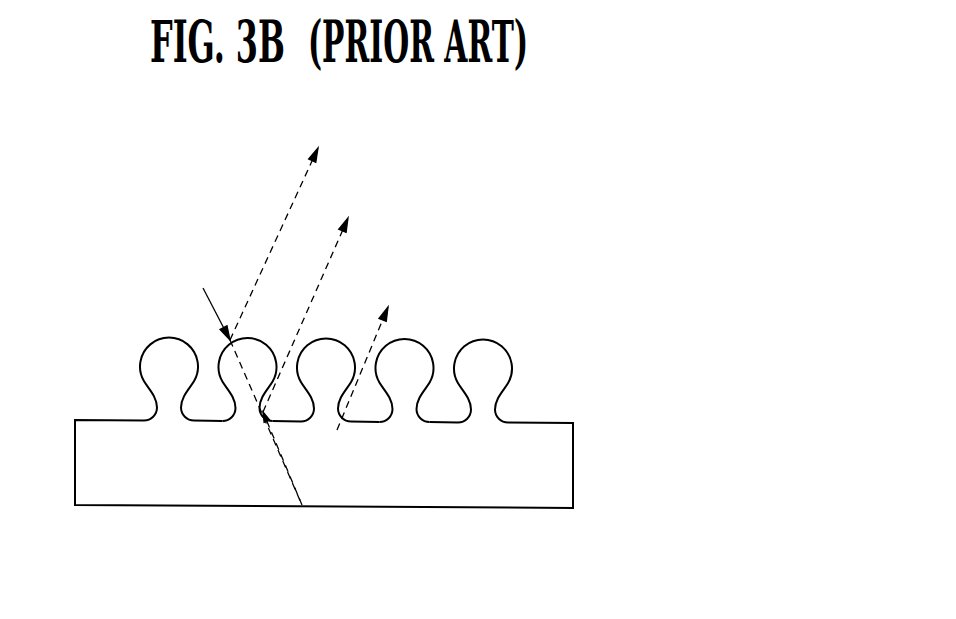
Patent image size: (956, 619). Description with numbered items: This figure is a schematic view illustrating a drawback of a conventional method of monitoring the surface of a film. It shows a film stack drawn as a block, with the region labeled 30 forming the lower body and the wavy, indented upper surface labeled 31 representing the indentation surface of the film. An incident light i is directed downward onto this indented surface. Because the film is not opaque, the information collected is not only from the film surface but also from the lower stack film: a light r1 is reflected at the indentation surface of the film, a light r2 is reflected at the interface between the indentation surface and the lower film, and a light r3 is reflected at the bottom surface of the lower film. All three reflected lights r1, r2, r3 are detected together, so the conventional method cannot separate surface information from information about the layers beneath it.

The substrate 30 is at (573, 468).
The first lens 31 is at (508, 378).
The incident light i is at (212, 295).
The light reflected at indentation surface r1 is at (286, 221).
The light reflected at interface r2 is at (300, 337).
The light reflected at bottom surface of lower film r3 is at (375, 343).